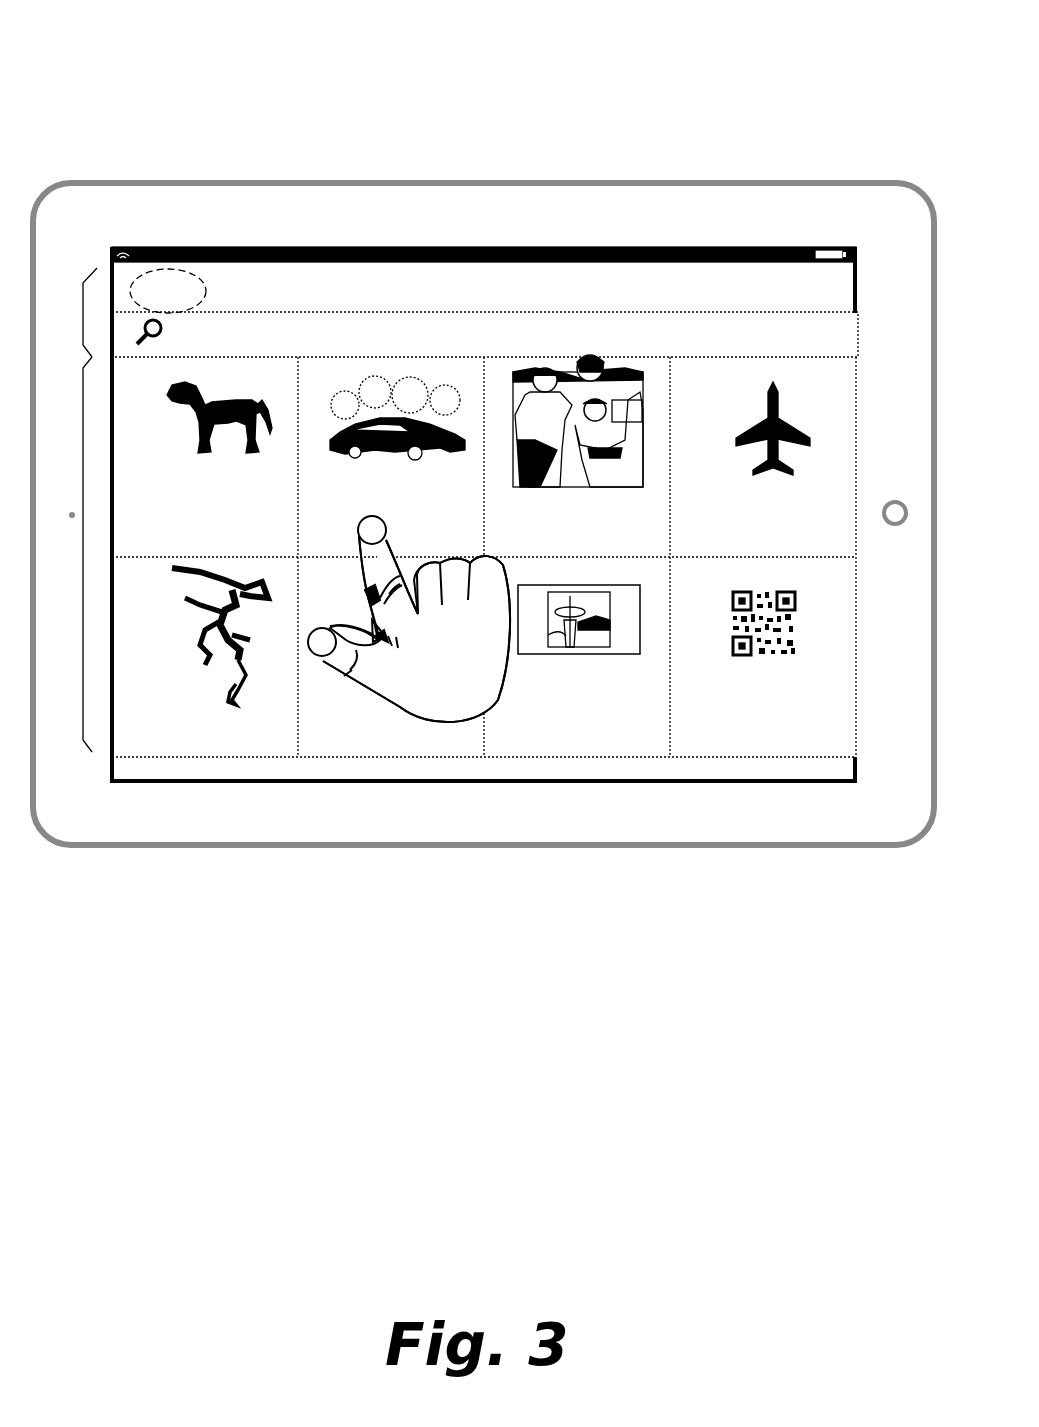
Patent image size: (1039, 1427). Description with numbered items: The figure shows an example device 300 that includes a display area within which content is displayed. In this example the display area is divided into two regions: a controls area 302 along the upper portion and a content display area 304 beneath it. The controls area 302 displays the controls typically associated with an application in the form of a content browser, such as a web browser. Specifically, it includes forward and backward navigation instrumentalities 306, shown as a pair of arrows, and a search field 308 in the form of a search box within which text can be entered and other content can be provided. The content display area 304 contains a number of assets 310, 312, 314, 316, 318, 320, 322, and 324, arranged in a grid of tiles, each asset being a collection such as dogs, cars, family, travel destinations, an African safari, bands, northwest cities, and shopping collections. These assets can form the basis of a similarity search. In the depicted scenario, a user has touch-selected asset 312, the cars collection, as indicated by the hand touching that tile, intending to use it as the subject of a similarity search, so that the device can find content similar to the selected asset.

The device 300 is at (163, 70).
The controls area 302 is at (83, 320).
The content display area 304 is at (83, 533).
The forward and backward navigation instrumentalities 306 is at (207, 290).
The search field 308 is at (485, 312).
The asset 310 is at (200, 424).
The asset 312 is at (389, 450).
The asset 314 is at (569, 441).
The asset 316 is at (751, 450).
The asset 318 is at (197, 654).
The asset 320 is at (363, 640).
The asset 322 is at (567, 635).
The asset 324 is at (746, 643).